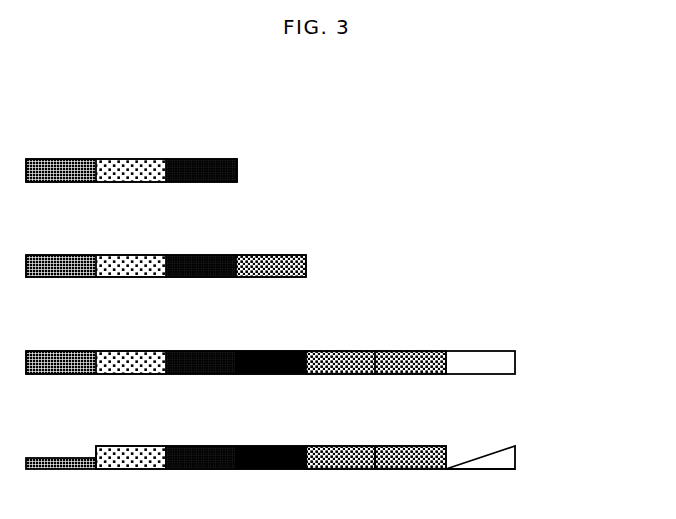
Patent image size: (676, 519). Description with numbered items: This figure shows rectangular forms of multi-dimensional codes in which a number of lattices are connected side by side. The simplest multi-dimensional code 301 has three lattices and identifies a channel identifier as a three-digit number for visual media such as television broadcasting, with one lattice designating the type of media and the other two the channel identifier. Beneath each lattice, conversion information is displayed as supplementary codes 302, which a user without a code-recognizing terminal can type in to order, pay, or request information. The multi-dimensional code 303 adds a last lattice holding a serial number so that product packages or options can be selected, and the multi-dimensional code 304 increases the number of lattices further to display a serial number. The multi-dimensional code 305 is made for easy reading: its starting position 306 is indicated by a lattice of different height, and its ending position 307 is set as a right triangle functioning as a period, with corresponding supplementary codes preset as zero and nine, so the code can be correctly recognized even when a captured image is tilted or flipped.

The multi-dimensional code 301 is at (174, 183).
The supplementary codes 302 is at (218, 200).
The multi-dimensional code 303 is at (320, 263).
The multi-dimensional code 304 is at (529, 360).
The multi-dimensional code 305 is at (315, 449).
The starting position 306 is at (58, 458).
The ending position 307 is at (488, 460).